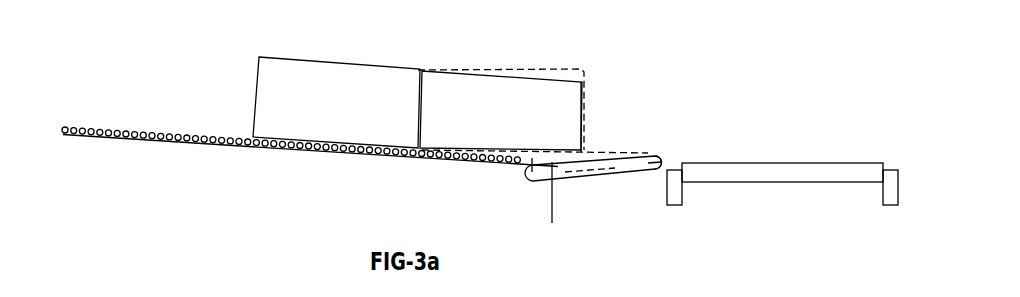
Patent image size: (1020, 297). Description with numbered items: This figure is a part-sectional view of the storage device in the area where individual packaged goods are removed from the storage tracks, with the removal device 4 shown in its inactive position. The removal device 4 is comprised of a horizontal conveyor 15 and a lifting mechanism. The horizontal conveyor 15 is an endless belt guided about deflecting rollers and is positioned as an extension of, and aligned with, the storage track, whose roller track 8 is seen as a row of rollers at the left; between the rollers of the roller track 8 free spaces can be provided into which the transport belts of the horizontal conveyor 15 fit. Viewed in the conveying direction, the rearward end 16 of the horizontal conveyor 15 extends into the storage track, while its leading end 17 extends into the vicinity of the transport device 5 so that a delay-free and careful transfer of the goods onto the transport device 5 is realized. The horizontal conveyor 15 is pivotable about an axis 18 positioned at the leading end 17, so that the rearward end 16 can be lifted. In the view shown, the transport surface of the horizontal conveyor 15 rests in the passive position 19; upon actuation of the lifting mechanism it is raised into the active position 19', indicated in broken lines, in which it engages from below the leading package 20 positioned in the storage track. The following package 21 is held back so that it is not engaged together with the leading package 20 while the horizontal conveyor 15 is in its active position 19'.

The removal device 4 is at (606, 186).
The transport device 5 is at (806, 161).
The roller track 8 is at (150, 135).
The horizontal conveyor 15 is at (649, 151).
The rearward end 16 is at (535, 182).
The leading end 17 is at (652, 155).
The axis 18 is at (653, 173).
The passive position 19 is at (619, 106).
The active position 19' is at (565, 99).
The leading package 20 is at (480, 83).
The following package 21 is at (300, 72).